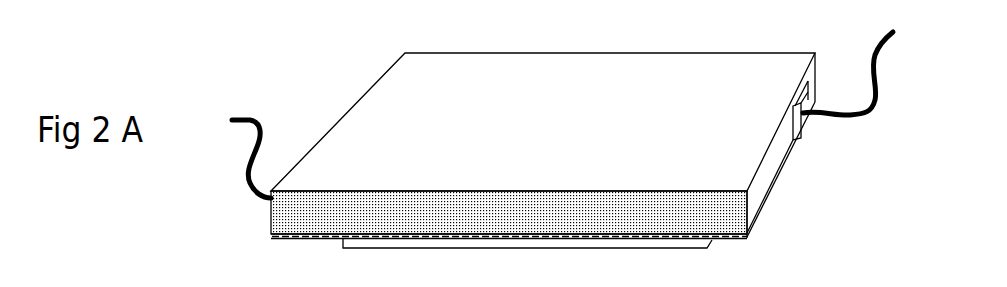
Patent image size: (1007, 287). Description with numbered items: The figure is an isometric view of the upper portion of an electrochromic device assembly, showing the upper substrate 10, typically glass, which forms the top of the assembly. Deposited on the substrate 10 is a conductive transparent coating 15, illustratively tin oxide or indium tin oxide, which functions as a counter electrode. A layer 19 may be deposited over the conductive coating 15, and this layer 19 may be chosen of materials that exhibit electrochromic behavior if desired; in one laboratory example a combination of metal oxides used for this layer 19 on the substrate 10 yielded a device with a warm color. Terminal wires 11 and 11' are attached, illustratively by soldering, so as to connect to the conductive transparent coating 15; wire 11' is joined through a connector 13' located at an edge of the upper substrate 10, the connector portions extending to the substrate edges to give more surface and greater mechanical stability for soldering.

The substrate 10 is at (383, 75).
The terminal wire 11 is at (237, 138).
The terminal wire 11' is at (846, 61).
The connector 13' is at (831, 133).
The conductive transparent coating 15 is at (270, 238).
The layer 19 is at (428, 242).